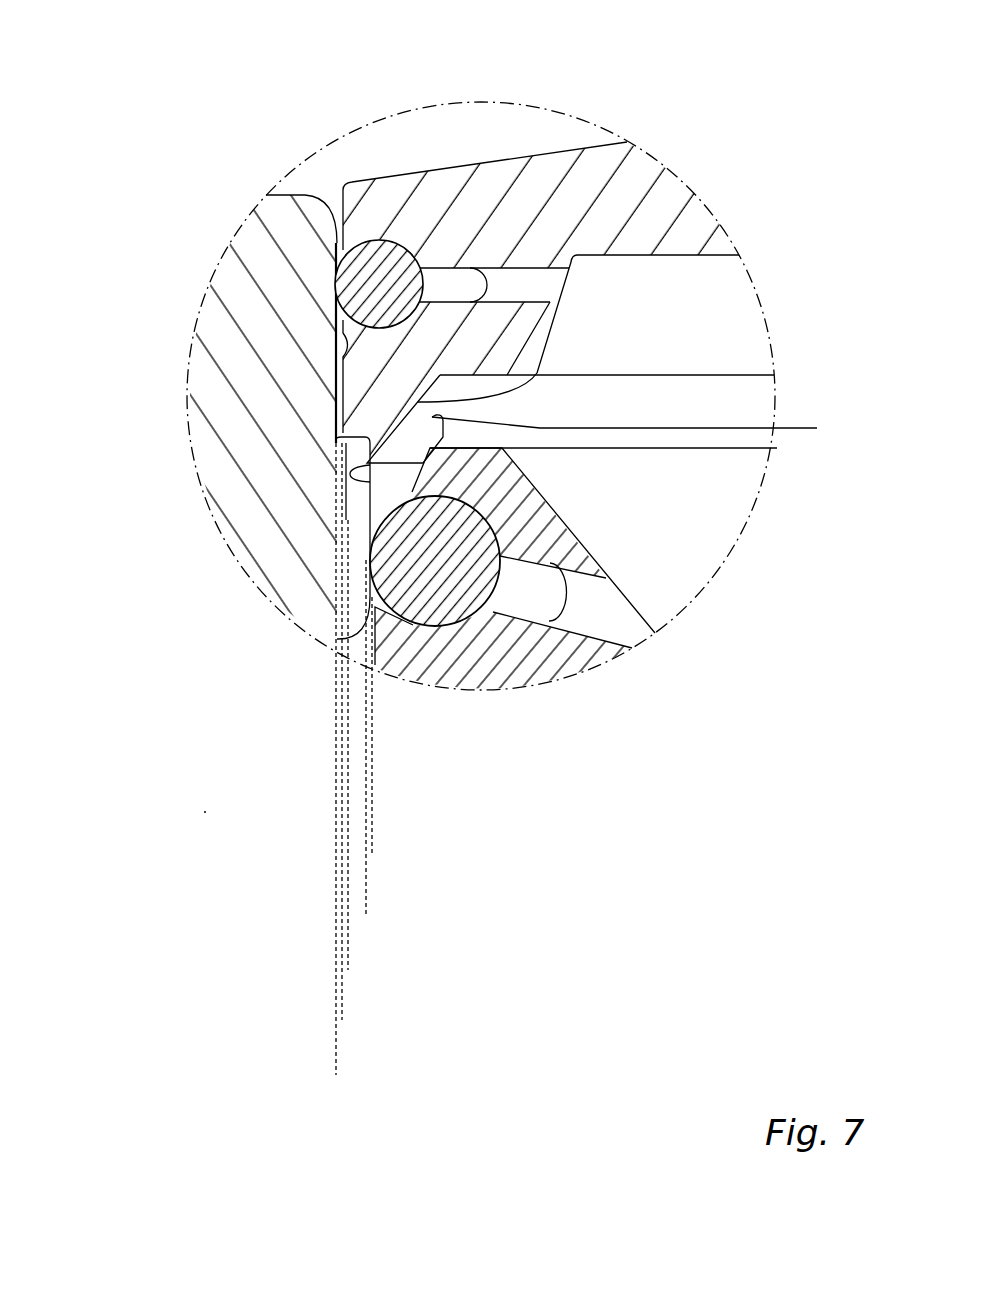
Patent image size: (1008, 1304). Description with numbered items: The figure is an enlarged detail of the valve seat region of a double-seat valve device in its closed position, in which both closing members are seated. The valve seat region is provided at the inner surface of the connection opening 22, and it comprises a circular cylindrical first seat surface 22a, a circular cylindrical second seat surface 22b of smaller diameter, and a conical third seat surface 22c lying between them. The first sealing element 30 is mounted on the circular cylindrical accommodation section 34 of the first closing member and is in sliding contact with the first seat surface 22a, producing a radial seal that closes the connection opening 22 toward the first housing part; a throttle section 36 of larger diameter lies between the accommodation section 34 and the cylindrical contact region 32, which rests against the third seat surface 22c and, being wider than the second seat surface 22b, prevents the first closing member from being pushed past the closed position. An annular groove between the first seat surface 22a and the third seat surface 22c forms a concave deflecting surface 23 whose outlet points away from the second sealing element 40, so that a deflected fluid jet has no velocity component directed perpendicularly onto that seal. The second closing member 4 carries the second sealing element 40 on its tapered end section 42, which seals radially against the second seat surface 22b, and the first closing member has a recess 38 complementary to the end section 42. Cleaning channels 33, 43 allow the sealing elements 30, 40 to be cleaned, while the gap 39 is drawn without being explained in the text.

The connection opening 22 is at (370, 148).
The first seat surface 22a is at (347, 343).
The second seat surface 22b is at (377, 560).
The third seat surface 22c is at (424, 445).
The deflecting surface 23 is at (362, 448).
The first sealing element 30 is at (380, 277).
The contact region 32 is at (522, 390).
The cleaning channel 33 is at (514, 284).
The accommodation section 34 is at (328, 233).
The throttle section 36 is at (318, 403).
The recess 38 is at (580, 403).
The gap 39 is at (621, 320).
The second closing member 4 is at (520, 512).
The second sealing element 40 is at (448, 575).
The end section 42 is at (641, 421).
The cleaning channel 43 is at (612, 620).